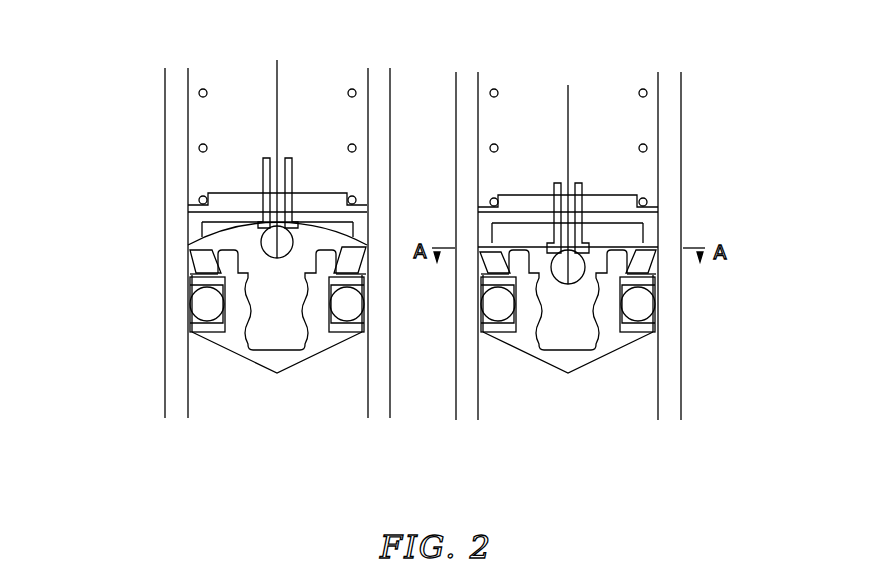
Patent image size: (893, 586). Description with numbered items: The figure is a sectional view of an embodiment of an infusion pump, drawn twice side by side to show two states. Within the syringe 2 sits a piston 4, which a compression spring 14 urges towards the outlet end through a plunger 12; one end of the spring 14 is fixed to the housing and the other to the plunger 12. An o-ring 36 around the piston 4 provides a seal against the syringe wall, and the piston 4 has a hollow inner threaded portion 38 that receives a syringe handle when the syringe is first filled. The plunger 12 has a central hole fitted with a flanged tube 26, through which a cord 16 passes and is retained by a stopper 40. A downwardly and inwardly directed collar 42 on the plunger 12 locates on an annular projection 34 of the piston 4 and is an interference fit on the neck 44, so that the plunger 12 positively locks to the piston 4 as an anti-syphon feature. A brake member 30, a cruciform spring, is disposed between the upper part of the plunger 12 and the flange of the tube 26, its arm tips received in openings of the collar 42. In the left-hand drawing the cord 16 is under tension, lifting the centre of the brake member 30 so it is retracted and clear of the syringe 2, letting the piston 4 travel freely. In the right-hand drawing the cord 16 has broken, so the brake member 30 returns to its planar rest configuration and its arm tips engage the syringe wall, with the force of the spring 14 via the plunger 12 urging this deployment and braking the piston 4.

The receptacle 2 is at (465, 122).
The piston 4 is at (605, 340).
The plunger 12 is at (232, 205).
The compression spring 14 is at (647, 148).
The cord 16 is at (262, 103).
The flanged tube 26 is at (658, 211).
The brake member 30 is at (214, 238).
The annular projection 34 is at (483, 279).
The o-ring 36 is at (638, 307).
The hollow inner threaded portion 38 is at (543, 318).
The stopper 40 is at (573, 272).
The collar 42 is at (195, 252).
The neck 44 is at (508, 263).